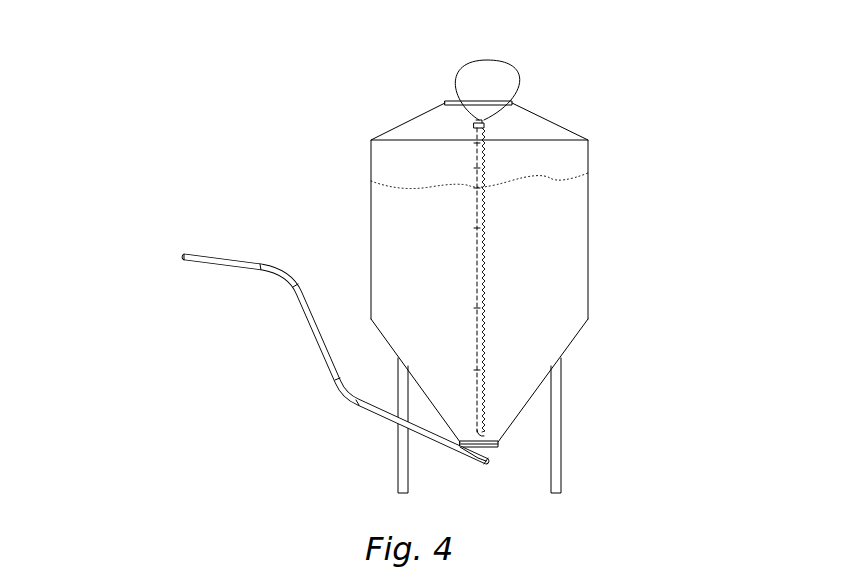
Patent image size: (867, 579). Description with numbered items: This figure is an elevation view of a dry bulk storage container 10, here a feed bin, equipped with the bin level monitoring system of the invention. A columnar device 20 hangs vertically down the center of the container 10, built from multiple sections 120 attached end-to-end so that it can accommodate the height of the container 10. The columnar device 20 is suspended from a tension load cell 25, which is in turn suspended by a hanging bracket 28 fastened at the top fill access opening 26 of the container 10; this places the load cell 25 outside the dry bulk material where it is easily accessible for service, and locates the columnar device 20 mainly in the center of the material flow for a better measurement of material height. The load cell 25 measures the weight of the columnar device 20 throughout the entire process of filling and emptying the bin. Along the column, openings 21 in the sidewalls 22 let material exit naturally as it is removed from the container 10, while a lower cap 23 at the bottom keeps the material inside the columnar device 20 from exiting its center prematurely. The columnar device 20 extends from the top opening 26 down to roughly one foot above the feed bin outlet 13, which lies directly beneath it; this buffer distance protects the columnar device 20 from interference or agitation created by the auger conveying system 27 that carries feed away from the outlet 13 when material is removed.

The dry bulk storage container 10 is at (556, 100).
The feed bin outlet 13 is at (485, 450).
The columnar device 20 is at (490, 282).
The openings 21 is at (477, 258).
The sidewalls 22 is at (477, 240).
The lower cap 23 is at (479, 433).
The tension load cell 25 is at (478, 121).
The fill access opening 26 is at (478, 118).
The conveying system 27 is at (378, 412).
The hanging bracket 28 is at (482, 122).
The sections 120 is at (484, 165).